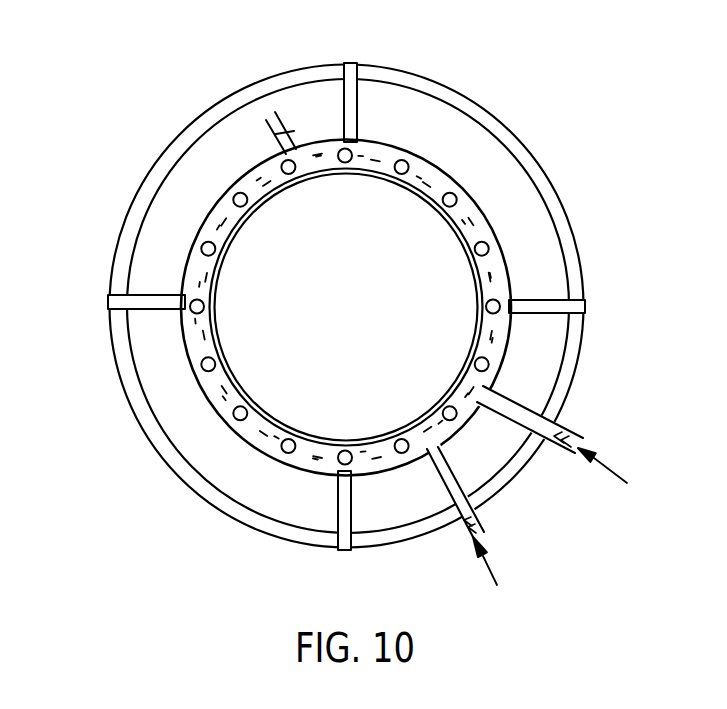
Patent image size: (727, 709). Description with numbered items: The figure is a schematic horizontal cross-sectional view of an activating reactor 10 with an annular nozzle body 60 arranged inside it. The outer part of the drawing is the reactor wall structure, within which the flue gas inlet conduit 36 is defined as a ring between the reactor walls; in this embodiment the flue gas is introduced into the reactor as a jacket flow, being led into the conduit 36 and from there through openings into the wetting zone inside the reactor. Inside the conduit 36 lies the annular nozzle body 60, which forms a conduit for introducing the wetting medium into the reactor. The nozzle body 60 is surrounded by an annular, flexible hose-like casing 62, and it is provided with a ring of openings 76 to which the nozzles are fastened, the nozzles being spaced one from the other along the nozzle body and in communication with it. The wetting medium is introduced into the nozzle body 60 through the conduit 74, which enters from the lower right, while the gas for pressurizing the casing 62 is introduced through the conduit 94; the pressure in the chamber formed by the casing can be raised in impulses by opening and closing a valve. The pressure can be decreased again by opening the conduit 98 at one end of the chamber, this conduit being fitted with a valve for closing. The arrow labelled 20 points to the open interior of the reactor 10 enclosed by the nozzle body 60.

The activating reactor 10 is at (370, 311).
The processing chamber interior 20 is at (414, 236).
The flue gas inlet conduit 36 is at (558, 210).
The nozzle body 60 is at (487, 231).
The casing 62 is at (443, 171).
The conduit 74 is at (568, 435).
The openings 76 is at (407, 169).
The conduit 94 is at (472, 526).
The conduit 98 is at (305, 114).